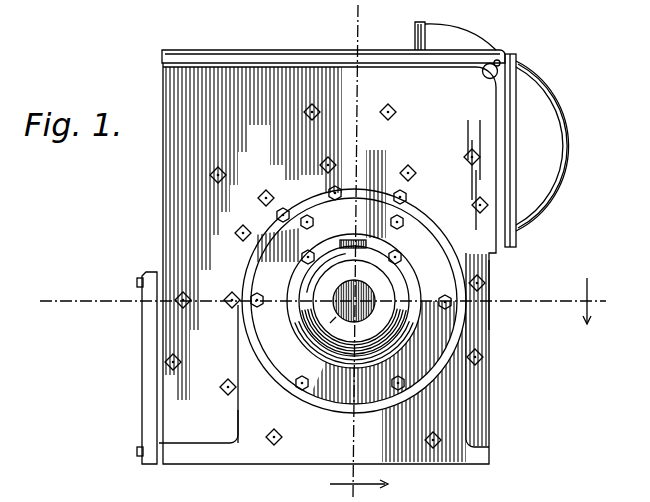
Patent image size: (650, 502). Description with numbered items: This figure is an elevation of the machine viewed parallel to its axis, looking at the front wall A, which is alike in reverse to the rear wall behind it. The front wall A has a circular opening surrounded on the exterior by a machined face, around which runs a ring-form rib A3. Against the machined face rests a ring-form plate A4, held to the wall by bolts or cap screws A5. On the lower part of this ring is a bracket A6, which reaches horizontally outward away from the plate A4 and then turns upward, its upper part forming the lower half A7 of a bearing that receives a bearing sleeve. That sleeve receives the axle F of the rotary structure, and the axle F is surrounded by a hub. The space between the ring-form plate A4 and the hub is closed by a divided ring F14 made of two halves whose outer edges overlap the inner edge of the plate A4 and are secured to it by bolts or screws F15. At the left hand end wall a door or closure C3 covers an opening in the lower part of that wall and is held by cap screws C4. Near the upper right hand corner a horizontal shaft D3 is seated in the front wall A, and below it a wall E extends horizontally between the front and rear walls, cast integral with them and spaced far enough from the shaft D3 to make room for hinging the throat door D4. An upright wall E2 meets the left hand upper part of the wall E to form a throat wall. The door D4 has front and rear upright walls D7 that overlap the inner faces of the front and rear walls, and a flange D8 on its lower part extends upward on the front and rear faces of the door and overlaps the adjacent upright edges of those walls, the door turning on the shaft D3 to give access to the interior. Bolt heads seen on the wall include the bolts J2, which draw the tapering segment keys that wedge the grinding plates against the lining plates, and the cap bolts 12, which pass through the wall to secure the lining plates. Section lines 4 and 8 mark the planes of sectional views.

The front wall A is at (178, 215).
The ring-form rib A3 is at (293, 268).
The ring-form plate A4 is at (403, 261).
The bolts or cap screws A5 is at (258, 305).
The bracket A6 is at (292, 337).
The lower half of bearing A7 is at (330, 323).
The door or closure C3 is at (142, 402).
The cap screws C4 is at (145, 298).
The horizontal shaft D3 is at (498, 72).
The throat door D4 is at (563, 146).
The front and rear upright walls of door D7 is at (540, 124).
The flange D8 is at (517, 240).
The wall E is at (458, 45).
The upright wall E2 is at (406, 34).
The axle F is at (345, 242).
The divided ring F14 is at (492, 297).
The bolts or screws F15 is at (300, 256).
The bolts J2 is at (465, 157).
The cap bolts 12 is at (473, 204).
The section line 4- 4 is at (359, 251).
The section line 8- 8 is at (325, 301).